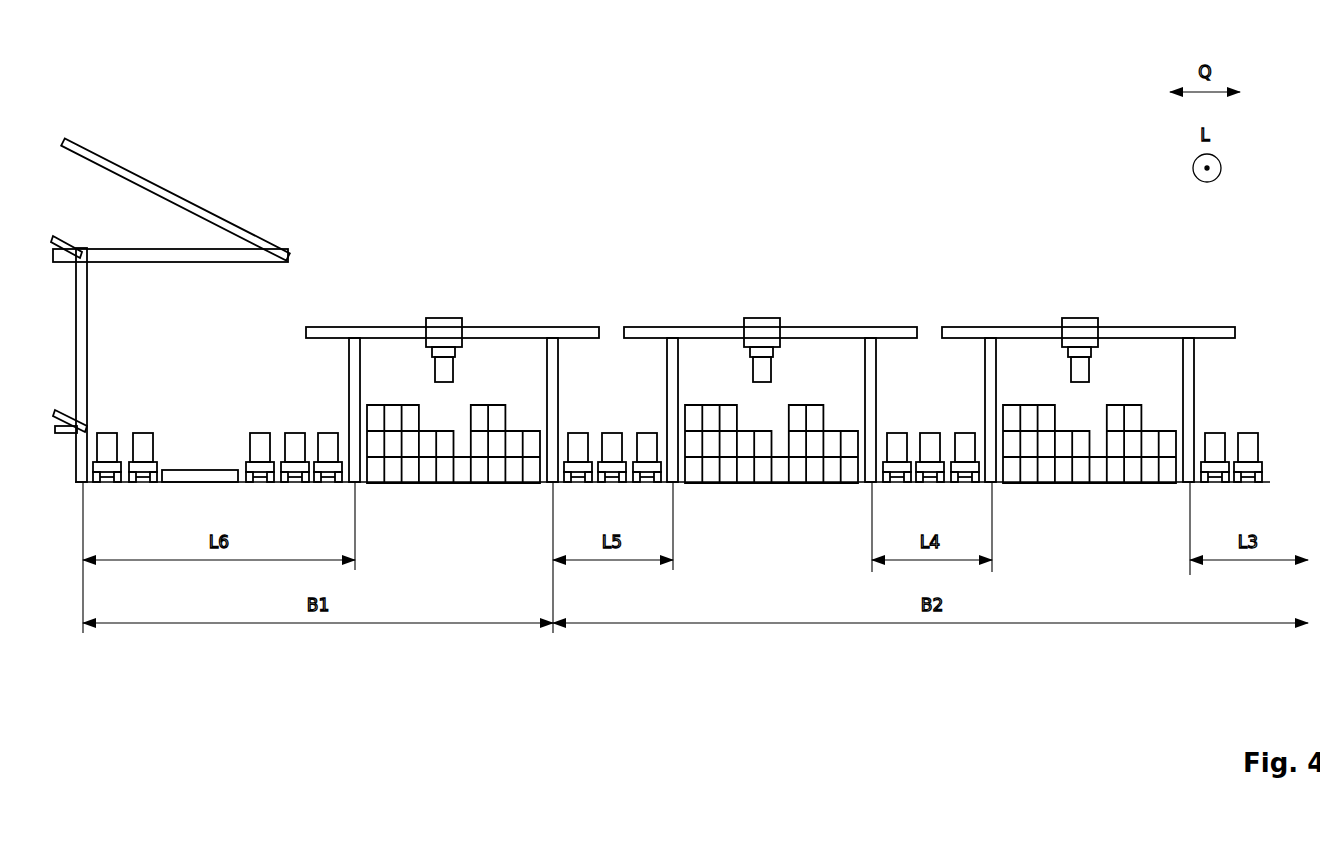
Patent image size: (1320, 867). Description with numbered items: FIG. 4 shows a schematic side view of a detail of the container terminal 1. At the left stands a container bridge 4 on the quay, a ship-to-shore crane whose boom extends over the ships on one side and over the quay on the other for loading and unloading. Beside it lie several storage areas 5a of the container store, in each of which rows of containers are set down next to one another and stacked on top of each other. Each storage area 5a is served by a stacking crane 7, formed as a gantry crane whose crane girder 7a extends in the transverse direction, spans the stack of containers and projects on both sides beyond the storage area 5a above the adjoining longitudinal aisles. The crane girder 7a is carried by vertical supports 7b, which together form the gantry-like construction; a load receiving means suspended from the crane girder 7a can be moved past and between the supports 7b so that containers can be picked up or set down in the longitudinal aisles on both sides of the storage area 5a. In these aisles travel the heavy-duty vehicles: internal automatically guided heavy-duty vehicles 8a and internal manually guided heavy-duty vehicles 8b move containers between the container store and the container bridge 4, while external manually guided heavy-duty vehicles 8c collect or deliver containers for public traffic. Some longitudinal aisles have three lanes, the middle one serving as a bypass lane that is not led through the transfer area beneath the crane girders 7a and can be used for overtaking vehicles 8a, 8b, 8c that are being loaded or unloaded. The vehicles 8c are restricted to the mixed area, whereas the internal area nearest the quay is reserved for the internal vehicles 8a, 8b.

The container terminal 1 is at (718, 167).
The container bridge 4 is at (180, 192).
The storage area 5a is at (418, 387).
The stacking crane 7 is at (769, 296).
The crane girder 7a is at (513, 322).
The vertical support 7b is at (347, 383).
The internal automatically guided heavy-duty vehicle 8a is at (548, 571).
The internal manually guided heavy-duty vehicle 8b is at (132, 498).
The external manually guided heavy-duty vehicle 8c is at (592, 498).